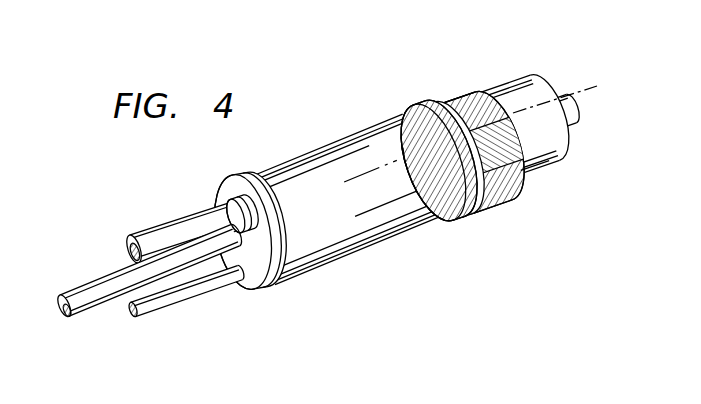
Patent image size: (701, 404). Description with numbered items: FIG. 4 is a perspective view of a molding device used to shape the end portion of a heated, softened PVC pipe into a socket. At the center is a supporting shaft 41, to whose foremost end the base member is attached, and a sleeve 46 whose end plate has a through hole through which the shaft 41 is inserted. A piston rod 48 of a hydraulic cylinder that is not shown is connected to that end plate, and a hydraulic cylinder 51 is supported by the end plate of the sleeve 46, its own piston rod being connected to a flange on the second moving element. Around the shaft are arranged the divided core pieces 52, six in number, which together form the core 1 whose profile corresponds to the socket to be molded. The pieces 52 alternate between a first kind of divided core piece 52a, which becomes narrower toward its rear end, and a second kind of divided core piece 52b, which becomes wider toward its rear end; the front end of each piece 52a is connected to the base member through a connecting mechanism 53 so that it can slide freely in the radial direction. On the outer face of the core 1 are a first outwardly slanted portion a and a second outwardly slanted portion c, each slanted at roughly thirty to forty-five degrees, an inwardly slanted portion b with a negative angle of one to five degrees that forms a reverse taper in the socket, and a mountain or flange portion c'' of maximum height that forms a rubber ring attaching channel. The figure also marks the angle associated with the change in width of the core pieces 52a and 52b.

The core 1 is at (536, 184).
The supporting shaft 41 is at (97, 294).
The sleeve 46 is at (307, 170).
The piston rod 48 is at (194, 285).
The hydraulic cylinder 51 is at (178, 227).
The divided core pieces 52 is at (513, 157).
The first kind of divided core piece 52a is at (516, 158).
The second kind of divided core piece 52b is at (467, 115).
The connecting mechanism 53 is at (529, 92).
The first outwardly slanted portion a is at (477, 90).
The inwardly slanted portion b is at (428, 106).
The second outwardly slanted portion c is at (429, 134).
The mountain or flange portion c'' is at (381, 122).